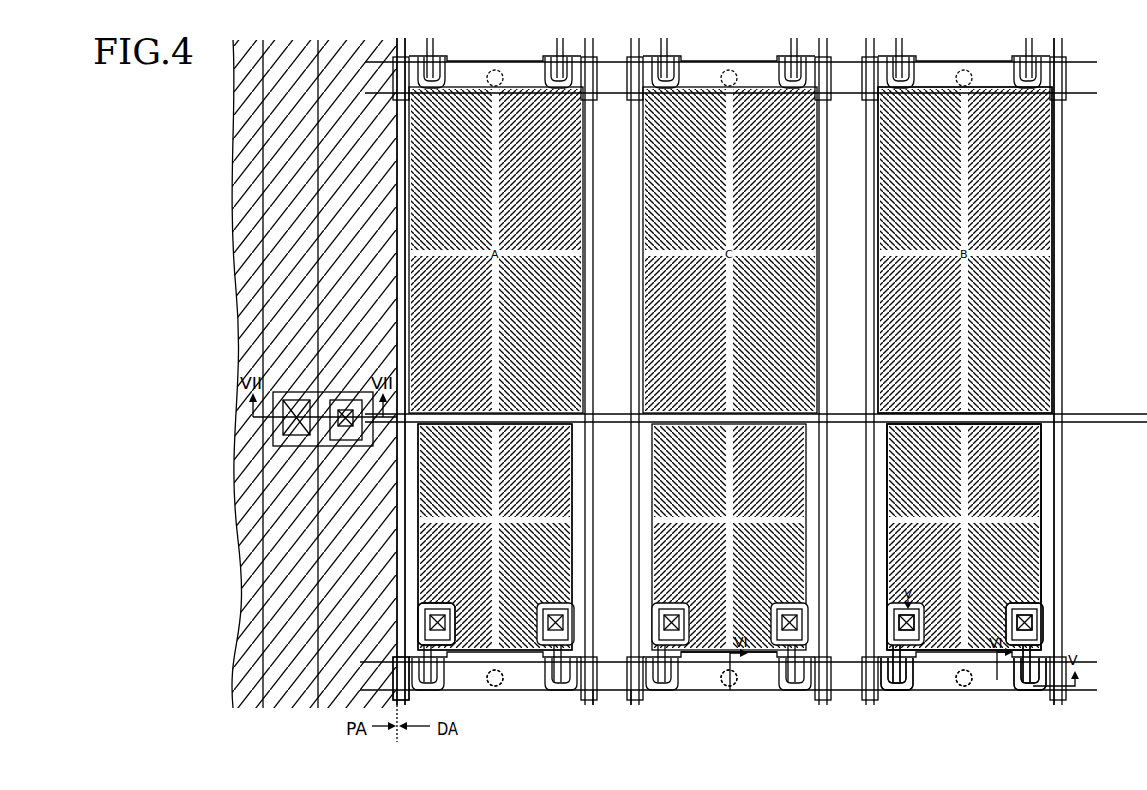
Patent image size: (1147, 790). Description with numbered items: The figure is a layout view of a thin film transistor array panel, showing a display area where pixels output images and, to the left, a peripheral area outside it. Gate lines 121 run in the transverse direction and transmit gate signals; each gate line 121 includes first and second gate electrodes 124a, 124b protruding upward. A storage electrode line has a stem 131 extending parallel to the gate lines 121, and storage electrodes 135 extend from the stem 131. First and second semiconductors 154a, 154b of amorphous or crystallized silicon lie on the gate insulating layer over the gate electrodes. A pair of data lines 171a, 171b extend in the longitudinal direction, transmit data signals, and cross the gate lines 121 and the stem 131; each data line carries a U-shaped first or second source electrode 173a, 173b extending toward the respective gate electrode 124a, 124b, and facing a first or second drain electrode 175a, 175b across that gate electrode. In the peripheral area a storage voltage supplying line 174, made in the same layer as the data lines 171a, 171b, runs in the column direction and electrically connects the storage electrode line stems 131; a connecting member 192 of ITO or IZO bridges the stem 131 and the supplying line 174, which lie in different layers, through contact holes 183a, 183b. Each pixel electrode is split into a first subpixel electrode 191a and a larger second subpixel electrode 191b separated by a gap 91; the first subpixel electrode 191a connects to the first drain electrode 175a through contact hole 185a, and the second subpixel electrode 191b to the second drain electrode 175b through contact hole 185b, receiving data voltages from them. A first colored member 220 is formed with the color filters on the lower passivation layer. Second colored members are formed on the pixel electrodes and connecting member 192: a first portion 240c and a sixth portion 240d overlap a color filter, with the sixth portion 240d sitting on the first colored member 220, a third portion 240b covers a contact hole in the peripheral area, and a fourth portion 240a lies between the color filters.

The gap 91 is at (420, 508).
The gate line 121 is at (1085, 692).
The first gate electrode 124a is at (997, 688).
The second gate electrode 124b is at (887, 652).
The stem of storage electrode line 131 is at (1075, 414).
The storage electrode 135 is at (409, 466).
The first semiconductor 154a is at (1036, 685).
The second semiconductor 154b is at (897, 688).
The first data line 171a is at (1060, 550).
The second data line 171b is at (400, 547).
The first source electrode 173a is at (1013, 688).
The second source electrode 173b is at (921, 688).
The storage voltage supplying line 174 is at (318, 178).
The first drain electrode 175a is at (1040, 650).
The second drain electrode 175b is at (440, 646).
The contact hole 183a is at (347, 400).
The contact hole 183b is at (298, 400).
The contact hole 185a is at (1035, 623).
The contact hole 185b is at (898, 624).
The first subpixel electrode 191a is at (1052, 477).
The second subpixel electrode 191b is at (1054, 250).
The connecting member 192 is at (272, 432).
The first colored member 220 is at (702, 660).
The fourth portion of second colored member 240a is at (631, 700).
The third portion of second colored member 240b is at (395, 680).
The first portion of second colored member 240c is at (952, 686).
The sixth portion of second colored member 240d is at (498, 686).